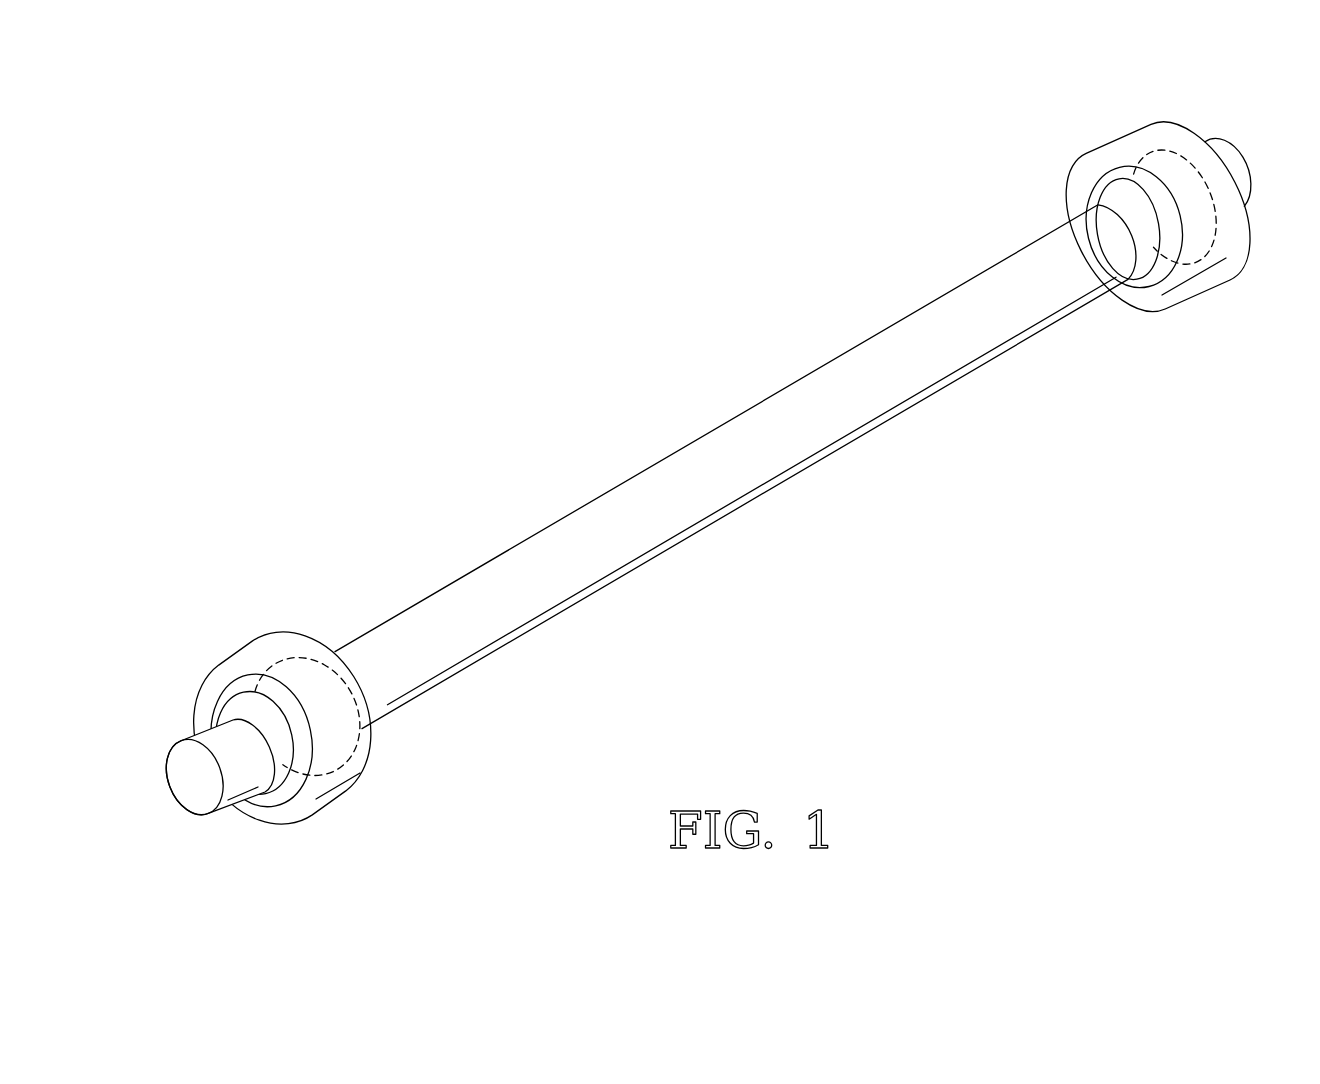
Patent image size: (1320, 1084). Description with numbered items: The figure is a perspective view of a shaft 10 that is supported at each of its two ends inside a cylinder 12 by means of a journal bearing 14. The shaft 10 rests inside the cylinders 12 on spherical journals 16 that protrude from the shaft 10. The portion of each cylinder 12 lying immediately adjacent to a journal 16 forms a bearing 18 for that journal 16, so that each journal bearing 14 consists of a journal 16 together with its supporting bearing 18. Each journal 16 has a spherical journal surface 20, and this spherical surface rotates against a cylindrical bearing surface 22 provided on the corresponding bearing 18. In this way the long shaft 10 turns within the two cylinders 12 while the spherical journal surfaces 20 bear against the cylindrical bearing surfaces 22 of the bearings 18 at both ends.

The shaft 10 is at (785, 410).
The cylinder 12 is at (285, 812).
The journal bearing 14 is at (695, 479).
The spherical journal 16 is at (380, 716).
The bearing 18 is at (247, 653).
The spherical journal surface 20 is at (232, 707).
The cylindrical bearing surface 22 is at (268, 783).